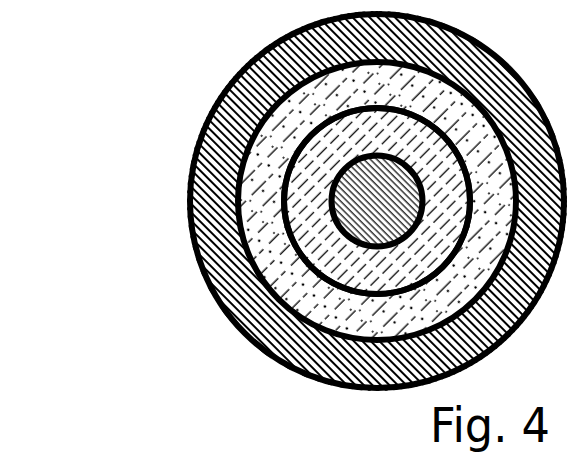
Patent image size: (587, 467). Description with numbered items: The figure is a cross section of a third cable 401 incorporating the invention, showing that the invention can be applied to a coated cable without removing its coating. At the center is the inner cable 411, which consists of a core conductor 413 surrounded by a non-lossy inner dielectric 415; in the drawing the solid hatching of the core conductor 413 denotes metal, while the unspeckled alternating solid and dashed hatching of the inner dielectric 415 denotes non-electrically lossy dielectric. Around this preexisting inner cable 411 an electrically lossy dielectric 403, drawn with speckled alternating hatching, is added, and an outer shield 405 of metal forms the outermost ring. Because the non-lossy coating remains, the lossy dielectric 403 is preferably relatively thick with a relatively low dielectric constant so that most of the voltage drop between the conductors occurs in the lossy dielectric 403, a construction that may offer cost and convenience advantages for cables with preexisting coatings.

The cable 401 is at (302, 201).
The electrically lossy dielectric 403 is at (398, 97).
The outer shield 405 is at (398, 49).
The inner cable 411 is at (272, 198).
The core conductor 413 is at (398, 215).
The non-lossy inner dielectric 415 is at (398, 146).